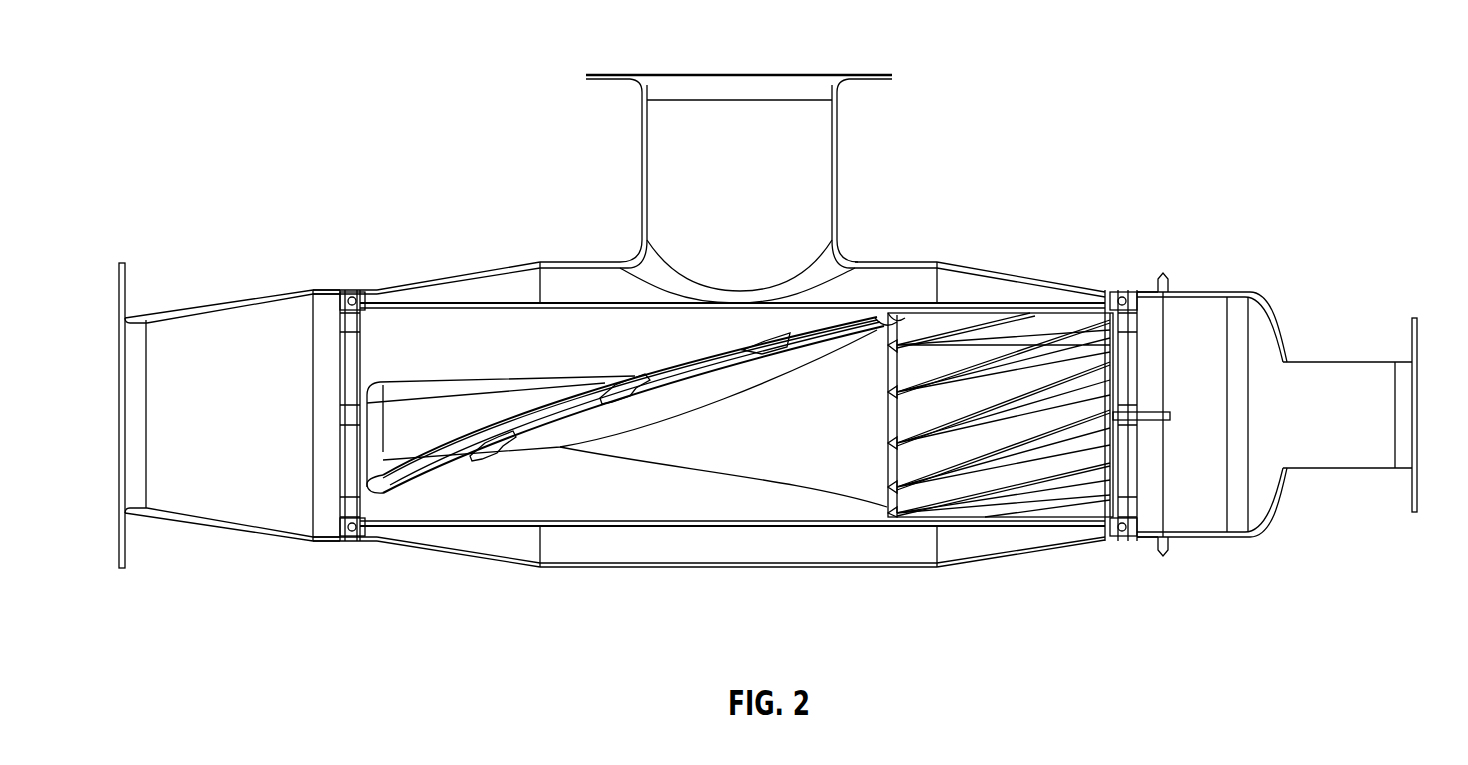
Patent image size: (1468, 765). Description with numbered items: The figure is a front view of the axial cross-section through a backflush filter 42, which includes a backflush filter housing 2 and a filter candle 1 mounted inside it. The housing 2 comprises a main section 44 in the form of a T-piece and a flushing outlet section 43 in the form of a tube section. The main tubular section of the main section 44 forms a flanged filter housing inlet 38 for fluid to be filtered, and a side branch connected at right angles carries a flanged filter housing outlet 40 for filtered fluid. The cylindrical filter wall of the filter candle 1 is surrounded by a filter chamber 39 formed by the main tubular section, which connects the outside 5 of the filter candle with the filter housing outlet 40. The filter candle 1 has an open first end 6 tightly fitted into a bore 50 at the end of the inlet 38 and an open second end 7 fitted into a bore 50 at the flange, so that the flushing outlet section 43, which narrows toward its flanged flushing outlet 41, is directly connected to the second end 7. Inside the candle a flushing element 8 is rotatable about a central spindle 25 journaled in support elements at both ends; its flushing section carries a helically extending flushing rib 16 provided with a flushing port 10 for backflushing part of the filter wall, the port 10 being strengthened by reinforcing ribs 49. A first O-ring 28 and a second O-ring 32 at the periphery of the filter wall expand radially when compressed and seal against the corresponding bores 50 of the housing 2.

The filter candle 1 is at (886, 548).
The backflush filter housing 2 is at (500, 266).
The outside of the filter candle 5 is at (588, 540).
The first end 6 is at (383, 553).
The second end 7 is at (1101, 550).
The flushing element 8 is at (722, 510).
The flushing port 10 is at (808, 325).
The flushing rib 16 is at (385, 447).
The central spindle 25 is at (1160, 414).
The first O-ring 28 is at (352, 532).
The second O-ring 32 is at (1127, 300).
The filter housing inlet 38 is at (114, 452).
The filter chamber 39 is at (686, 540).
The filter housing outlet 40 is at (772, 66).
The flushing outlet 41 is at (1424, 446).
The backflush filter 42 is at (1026, 187).
The flushing outlet section 43 is at (1282, 326).
The main section 44 is at (920, 256).
The reinforcing ribs 49 is at (625, 380).
The bore 50 is at (328, 530).